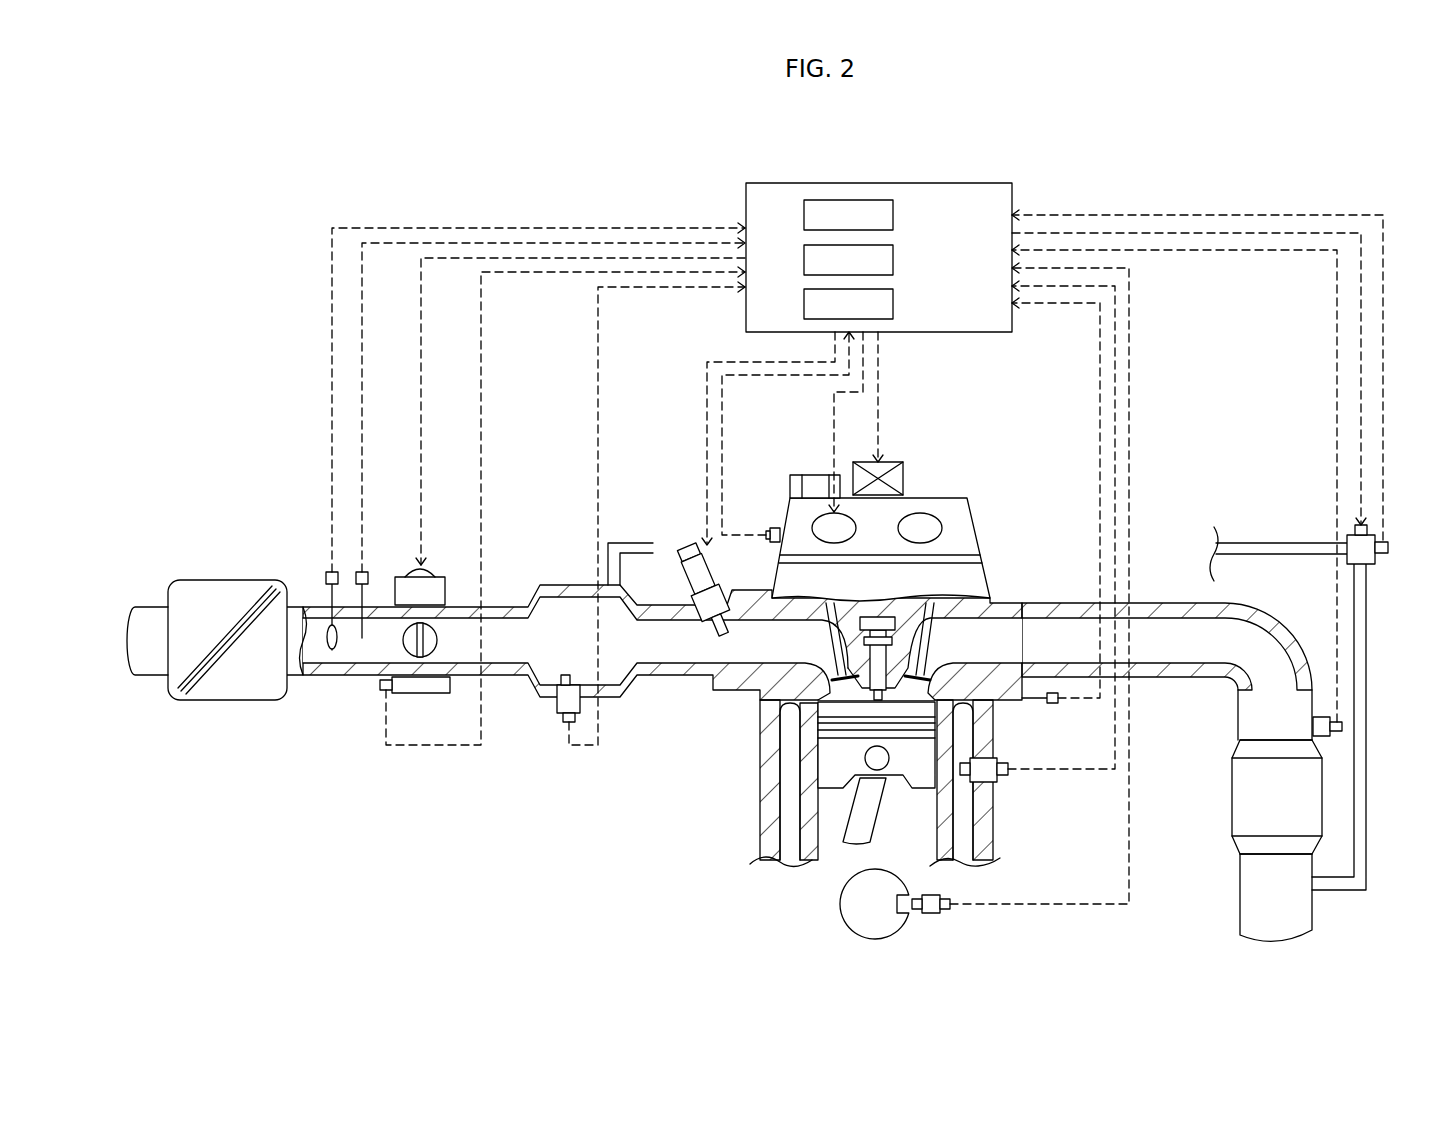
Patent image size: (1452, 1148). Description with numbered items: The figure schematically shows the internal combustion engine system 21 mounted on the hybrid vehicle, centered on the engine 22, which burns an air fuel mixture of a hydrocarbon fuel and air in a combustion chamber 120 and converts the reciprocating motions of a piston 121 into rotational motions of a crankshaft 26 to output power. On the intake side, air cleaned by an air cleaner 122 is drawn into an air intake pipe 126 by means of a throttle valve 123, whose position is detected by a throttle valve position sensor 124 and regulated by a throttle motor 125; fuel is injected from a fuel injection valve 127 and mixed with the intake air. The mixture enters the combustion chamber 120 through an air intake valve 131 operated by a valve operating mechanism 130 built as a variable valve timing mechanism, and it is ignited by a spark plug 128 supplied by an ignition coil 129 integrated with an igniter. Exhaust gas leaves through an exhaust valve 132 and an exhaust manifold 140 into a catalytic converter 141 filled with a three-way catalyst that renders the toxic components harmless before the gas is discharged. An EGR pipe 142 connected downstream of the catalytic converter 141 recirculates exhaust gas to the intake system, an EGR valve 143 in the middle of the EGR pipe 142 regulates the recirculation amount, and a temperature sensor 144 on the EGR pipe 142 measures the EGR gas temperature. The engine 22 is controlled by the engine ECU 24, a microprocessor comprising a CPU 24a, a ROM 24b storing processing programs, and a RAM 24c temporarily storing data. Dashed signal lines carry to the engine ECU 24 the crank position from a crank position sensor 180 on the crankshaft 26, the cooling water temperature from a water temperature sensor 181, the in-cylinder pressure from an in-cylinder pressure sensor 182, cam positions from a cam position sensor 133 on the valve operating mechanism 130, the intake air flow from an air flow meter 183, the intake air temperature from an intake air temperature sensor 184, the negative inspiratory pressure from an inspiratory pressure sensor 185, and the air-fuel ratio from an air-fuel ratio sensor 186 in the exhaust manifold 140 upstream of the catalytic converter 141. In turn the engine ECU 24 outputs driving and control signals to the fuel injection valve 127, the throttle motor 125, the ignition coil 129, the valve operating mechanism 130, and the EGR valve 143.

The internal combustion engine system 21 is at (788, 581).
The engine 22 is at (906, 516).
The engine electronic control unit 24 is at (879, 233).
The CPU 24a is at (895, 213).
The ROM 24b is at (895, 258).
The RAM 24c is at (895, 302).
The crankshaft 26 is at (842, 906).
The combustion chamber 120 is at (775, 715).
The piston 121 is at (835, 772).
The air cleaner 122 is at (282, 582).
The throttle valve 123 is at (418, 642).
The throttle valve position sensor 124 is at (420, 694).
The throttle motor 125 is at (424, 577).
The air intake pipe 126 is at (508, 607).
The fuel injection valve 127 is at (652, 566).
The spark plug 128 is at (880, 656).
The ignition coil 129 is at (905, 468).
The valve operating mechanism 130 is at (1000, 545).
The air intake valve 131 is at (833, 650).
The exhaust valve 132 is at (1000, 657).
The cam position sensor 133 is at (772, 527).
The exhaust manifold 140 is at (1170, 672).
The catalytic converter 141 is at (1235, 800).
The EGR pipe 142 is at (1366, 680).
The EGR valve 143 is at (1348, 540).
The temperature sensor 144 is at (1386, 553).
The crank position sensor 180 is at (938, 914).
The water temperature sensor 181 is at (1009, 777).
The in-cylinder pressure sensor 182 is at (1053, 704).
The air flow meter 183 is at (330, 572).
The intake air temperature sensor 184 is at (364, 572).
The inspiratory pressure sensor 185 is at (557, 705).
The air-fuel ratio sensor 186 is at (1331, 727).